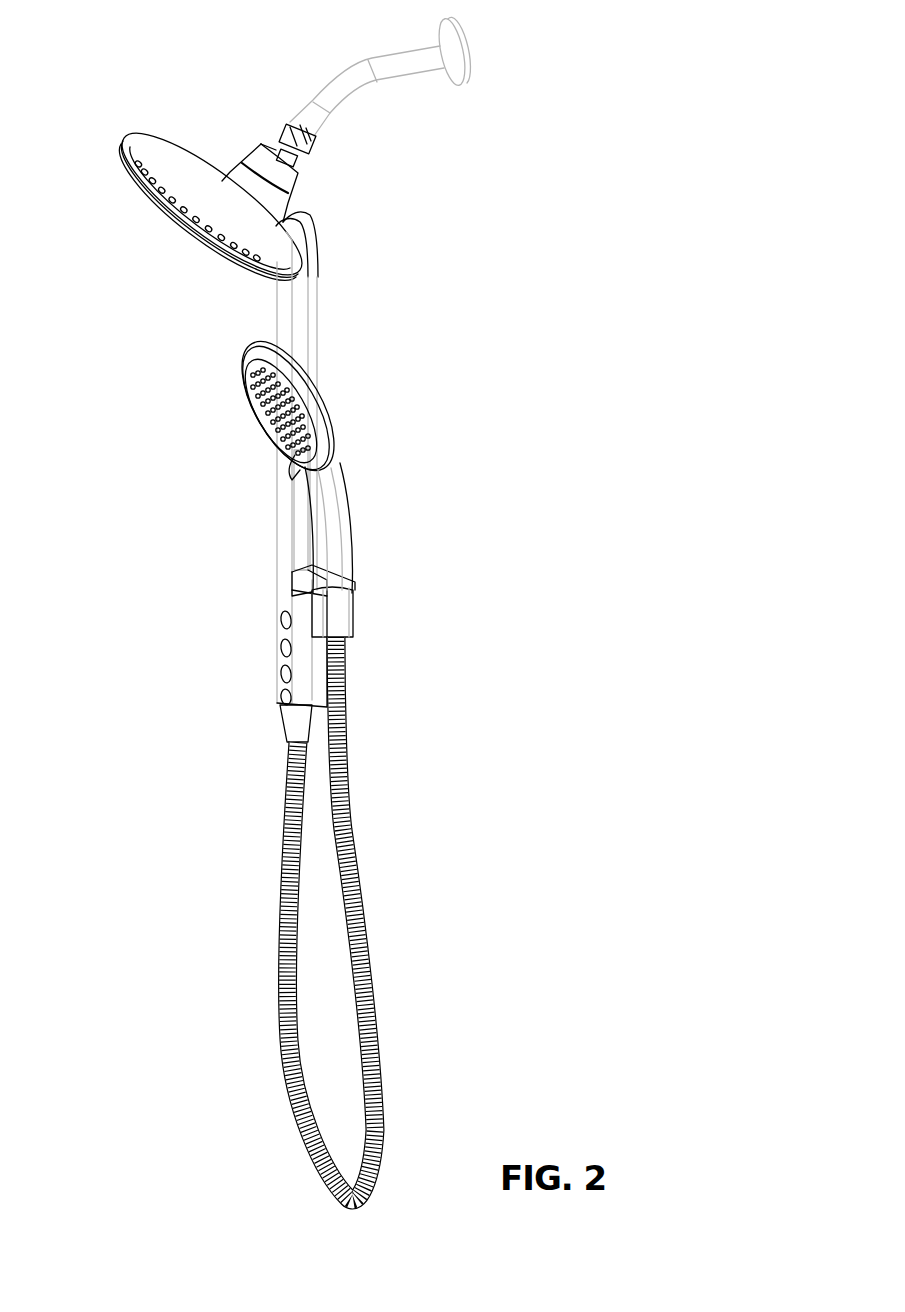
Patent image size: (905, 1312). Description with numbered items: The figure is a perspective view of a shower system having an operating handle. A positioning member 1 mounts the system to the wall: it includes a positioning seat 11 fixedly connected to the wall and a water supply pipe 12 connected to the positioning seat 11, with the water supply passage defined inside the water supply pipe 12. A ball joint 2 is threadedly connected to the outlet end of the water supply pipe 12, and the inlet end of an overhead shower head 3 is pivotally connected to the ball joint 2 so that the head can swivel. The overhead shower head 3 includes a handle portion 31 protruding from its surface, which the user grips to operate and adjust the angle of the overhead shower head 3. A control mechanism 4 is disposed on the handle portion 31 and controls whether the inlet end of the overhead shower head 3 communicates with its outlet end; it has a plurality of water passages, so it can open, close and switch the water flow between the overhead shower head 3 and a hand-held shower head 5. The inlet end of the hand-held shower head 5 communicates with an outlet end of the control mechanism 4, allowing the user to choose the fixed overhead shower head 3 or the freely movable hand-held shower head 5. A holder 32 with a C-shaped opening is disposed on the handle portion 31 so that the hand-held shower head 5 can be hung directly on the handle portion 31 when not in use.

The positioning member 1 is at (427, 128).
The positioning seat 11 is at (453, 75).
The water supply pipe 12 is at (353, 80).
The ball joint 2 is at (177, 168).
The overhead shower head 3 is at (148, 165).
The control mechanism 4 is at (310, 487).
The handle portion 31 is at (287, 520).
The holder 32 is at (330, 617).
The hand-held shower head 5 is at (333, 450).